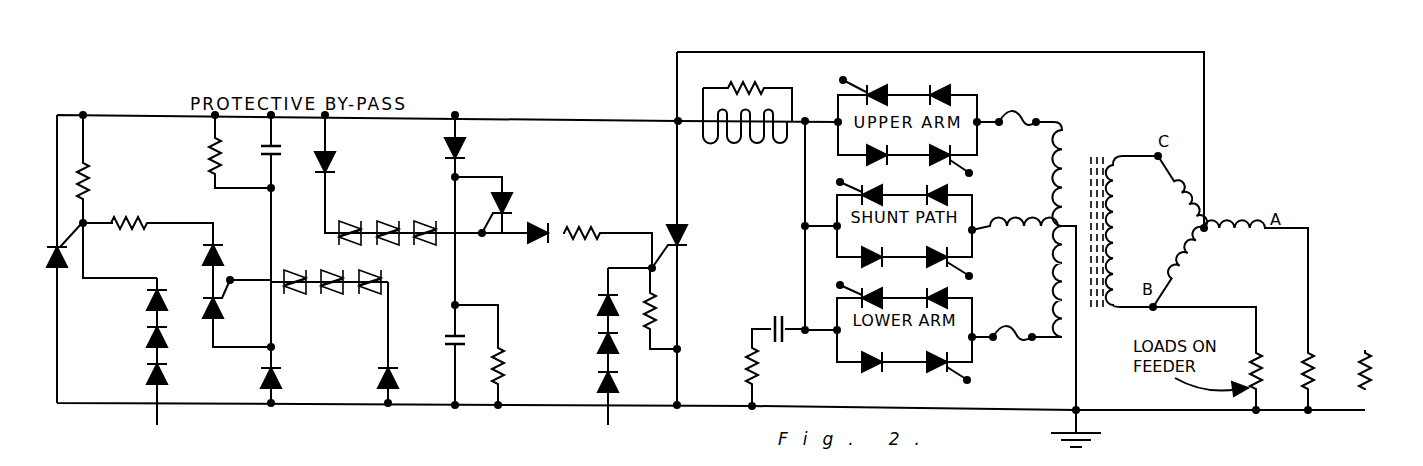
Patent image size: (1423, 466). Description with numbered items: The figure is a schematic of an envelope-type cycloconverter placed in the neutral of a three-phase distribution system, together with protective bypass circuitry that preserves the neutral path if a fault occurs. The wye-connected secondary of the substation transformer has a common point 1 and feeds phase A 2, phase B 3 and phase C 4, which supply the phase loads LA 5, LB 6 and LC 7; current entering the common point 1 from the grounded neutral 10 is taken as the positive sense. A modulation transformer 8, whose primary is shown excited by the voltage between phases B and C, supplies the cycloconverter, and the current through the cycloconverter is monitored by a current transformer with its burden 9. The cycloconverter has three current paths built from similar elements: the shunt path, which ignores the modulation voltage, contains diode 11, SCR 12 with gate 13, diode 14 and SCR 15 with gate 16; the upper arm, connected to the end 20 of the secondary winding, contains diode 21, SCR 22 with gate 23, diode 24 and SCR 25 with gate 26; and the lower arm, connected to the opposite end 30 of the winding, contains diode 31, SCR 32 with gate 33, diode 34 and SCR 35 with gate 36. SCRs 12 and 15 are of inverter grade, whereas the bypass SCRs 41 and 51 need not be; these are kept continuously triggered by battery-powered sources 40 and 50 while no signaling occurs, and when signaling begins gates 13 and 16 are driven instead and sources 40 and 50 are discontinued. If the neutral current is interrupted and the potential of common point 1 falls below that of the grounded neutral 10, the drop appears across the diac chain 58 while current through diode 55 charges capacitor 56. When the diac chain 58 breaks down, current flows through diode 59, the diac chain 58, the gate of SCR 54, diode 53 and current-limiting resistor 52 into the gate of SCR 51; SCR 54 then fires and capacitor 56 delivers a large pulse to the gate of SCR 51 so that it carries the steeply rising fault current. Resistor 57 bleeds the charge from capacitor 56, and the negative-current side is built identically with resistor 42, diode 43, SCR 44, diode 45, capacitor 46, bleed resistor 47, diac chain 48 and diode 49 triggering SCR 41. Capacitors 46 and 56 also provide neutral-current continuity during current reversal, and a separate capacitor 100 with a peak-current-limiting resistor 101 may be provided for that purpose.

The common point of the wye-connected secondary 1 is at (1184, 229).
The phase A 2 is at (1292, 228).
The phase B 3 is at (1162, 304).
The phase C 4 is at (1157, 153).
The phase load LA 5 is at (1315, 365).
The phase load LB 6 is at (1263, 365).
The phase load LC 7 is at (1372, 365).
The modulation transformer 8 is at (1095, 157).
The current transformer with associated burden 9 is at (735, 88).
The grounded neutral 10 is at (1080, 410).
The shunt path diode 11 is at (935, 190).
The shunt path SCR 12 is at (876, 190).
The gate of shunt path SCR 13 is at (840, 181).
The shunt path diode 14 is at (875, 250).
The shunt path SCR 15 is at (930, 250).
The gate of shunt path SCR 16 is at (973, 275).
The end of modulation transformer secondary winding 20 is at (1020, 117).
The upper arm diode 21 is at (931, 87).
The upper arm SCR 22 is at (880, 86).
The gate of upper arm SCR 23 is at (846, 80).
The upper arm diode 24 is at (872, 148).
The upper arm SCR 25 is at (938, 147).
The gate of upper arm SCR 26 is at (973, 171).
The end of modulation transformer secondary winding 30 is at (1012, 330).
The lower arm diode 31 is at (930, 293).
The lower arm SCR 32 is at (863, 295).
The gate of lower arm SCR 33 is at (840, 284).
The lower arm diode 34 is at (875, 354).
The lower arm SCR 35 is at (930, 354).
The gate of lower arm SCR 36 is at (971, 380).
The battery-powered triggering source 40 is at (608, 358).
The bypass SCR for negative current 41 is at (687, 232).
The current-limiting resistor 42 is at (590, 228).
The diode 43 is at (545, 228).
The SCR 44 is at (512, 200).
The diode 45 is at (467, 148).
The capacitor 46 is at (450, 336).
The bleed resistor 47 is at (503, 368).
The diac chain 48 is at (396, 254).
The diode 49 is at (333, 160).
The battery-powered triggering source 50 is at (156, 362).
The bypass SCR for positive current 51 is at (64, 262).
The current-limiting resistor 52 is at (125, 222).
The diode 53 is at (219, 244).
The SCR 54 is at (222, 310).
The diode 55 is at (281, 376).
The capacitor 56 is at (278, 160).
The bleed resistor 57 is at (212, 152).
The diac chain 58 is at (366, 300).
The diode 59 is at (383, 370).
The bypass capacitor 100 is at (778, 315).
The resistor 101 is at (746, 368).